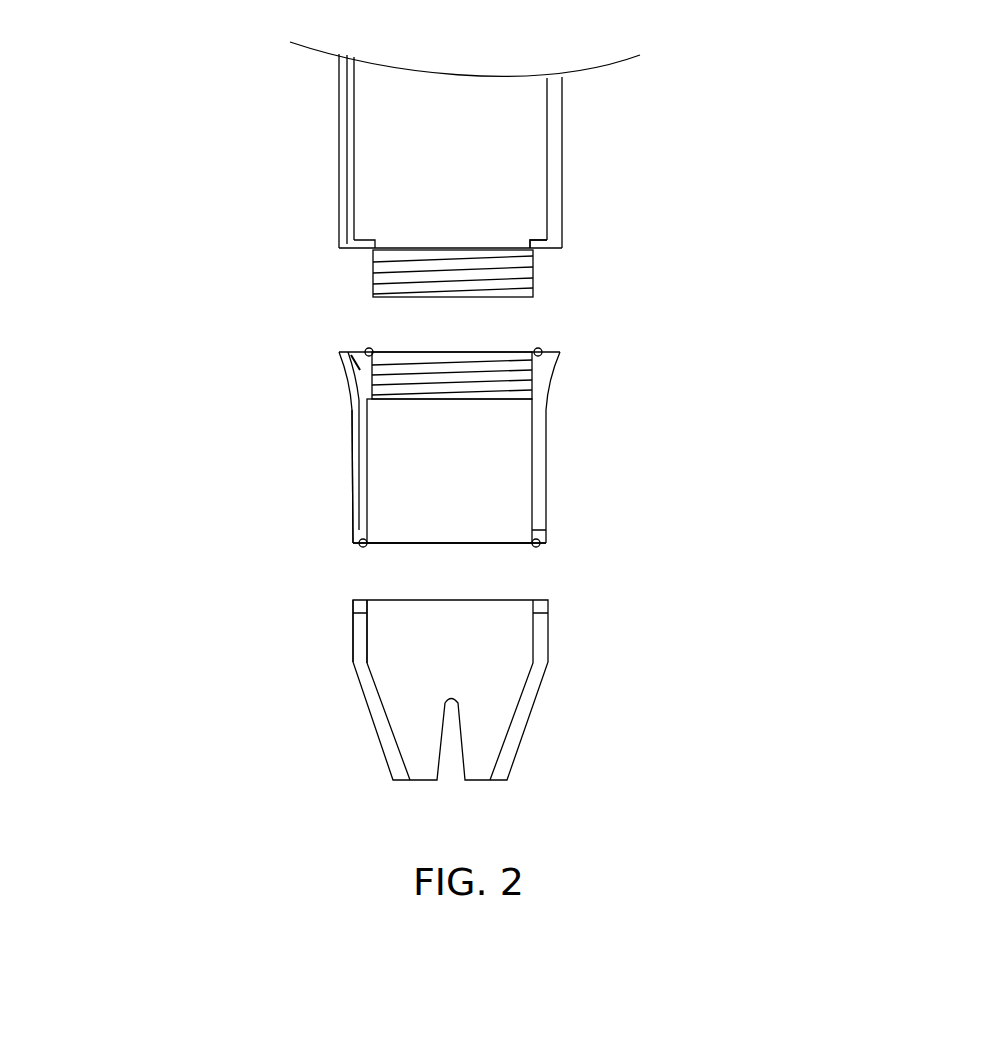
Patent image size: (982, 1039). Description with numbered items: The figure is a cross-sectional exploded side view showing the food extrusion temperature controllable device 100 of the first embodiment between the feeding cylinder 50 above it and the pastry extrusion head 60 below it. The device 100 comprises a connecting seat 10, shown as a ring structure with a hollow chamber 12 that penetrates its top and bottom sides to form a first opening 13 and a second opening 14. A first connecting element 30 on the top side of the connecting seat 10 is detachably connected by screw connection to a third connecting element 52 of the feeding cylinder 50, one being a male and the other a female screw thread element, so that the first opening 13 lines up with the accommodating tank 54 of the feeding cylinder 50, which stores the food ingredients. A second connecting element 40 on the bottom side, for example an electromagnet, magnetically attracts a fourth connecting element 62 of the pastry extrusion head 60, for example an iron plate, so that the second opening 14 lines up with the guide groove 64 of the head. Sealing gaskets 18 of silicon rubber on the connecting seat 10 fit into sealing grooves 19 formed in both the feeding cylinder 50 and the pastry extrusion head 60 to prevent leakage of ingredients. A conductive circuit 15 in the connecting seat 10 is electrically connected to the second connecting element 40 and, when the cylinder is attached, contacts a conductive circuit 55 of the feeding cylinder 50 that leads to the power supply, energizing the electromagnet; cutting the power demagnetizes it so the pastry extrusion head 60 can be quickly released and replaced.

The food extrusion temperature controllable device 100 is at (653, 469).
The connecting seat 10 is at (540, 503).
The chamber 12 is at (398, 435).
The first opening 13 is at (365, 350).
The second opening 14 is at (398, 543).
The conductive circuit 15 is at (357, 503).
The sealing gasket 18 is at (542, 350).
The sealing groove 19 is at (545, 245).
The first connecting element 30 is at (358, 375).
The second connecting element 40 is at (353, 532).
The feeding cylinder 50 is at (563, 162).
The third connecting element 52 is at (377, 277).
The accommodating tank 54 is at (378, 110).
The conductive circuit 55 is at (347, 178).
The pastry extrusion head 60 is at (532, 706).
The fourth connecting element 62 is at (355, 608).
The guide groove 64 is at (395, 697).